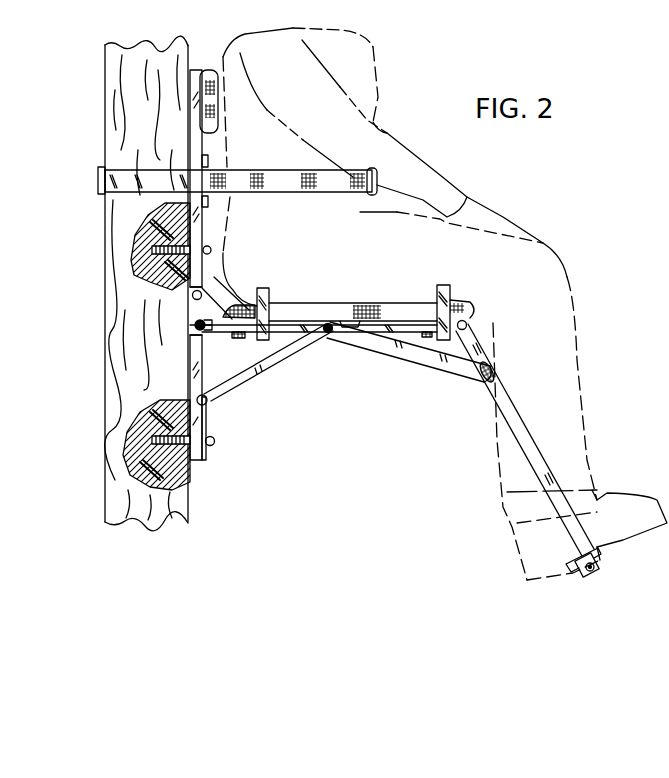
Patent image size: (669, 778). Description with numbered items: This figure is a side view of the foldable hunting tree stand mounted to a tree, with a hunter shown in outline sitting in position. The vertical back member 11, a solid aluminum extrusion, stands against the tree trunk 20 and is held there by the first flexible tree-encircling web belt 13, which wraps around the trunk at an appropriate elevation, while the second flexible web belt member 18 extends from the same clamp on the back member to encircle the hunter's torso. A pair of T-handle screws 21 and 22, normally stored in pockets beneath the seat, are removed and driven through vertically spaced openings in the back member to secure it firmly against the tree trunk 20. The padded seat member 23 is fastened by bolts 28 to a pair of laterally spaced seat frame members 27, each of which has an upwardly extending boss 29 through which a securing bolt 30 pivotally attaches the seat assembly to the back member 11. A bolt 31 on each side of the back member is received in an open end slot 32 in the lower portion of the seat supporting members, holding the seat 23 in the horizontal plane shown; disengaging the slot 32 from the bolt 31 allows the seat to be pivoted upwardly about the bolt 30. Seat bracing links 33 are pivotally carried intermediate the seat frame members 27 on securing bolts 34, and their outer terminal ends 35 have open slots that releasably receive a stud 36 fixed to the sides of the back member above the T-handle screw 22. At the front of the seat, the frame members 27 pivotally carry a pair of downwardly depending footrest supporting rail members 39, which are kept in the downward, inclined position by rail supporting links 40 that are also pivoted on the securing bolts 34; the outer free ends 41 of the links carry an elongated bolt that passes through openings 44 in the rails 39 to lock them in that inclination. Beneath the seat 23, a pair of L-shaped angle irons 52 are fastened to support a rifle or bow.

The vertical back member 11 is at (208, 68).
The first flexible tree-encircling web belt 13 is at (102, 186).
The second flexible web belt member 18 is at (281, 192).
The tree trunk 20 is at (110, 96).
The T-handle screw 21 is at (210, 247).
The T-handle screw 22 is at (213, 446).
The padded seat member 23 is at (357, 281).
The seat frame members 27 is at (286, 328).
The bolts 28 is at (240, 338).
The upwardly extending boss 29 is at (220, 298).
The securing bolt 30 is at (213, 278).
The bolt 31 is at (196, 326).
The open end slot 32 is at (200, 337).
The seat bracing links 33 is at (293, 350).
The securing bolts 34 is at (333, 338).
The outer terminal ends 35 is at (209, 400).
The stud 36 is at (206, 412).
The footrest supporting rail members 39 is at (568, 432).
The rail supporting links 40 is at (392, 348).
The outer free ends 41 is at (450, 368).
The openings 44 is at (497, 363).
The L-shaped angle irons 52 is at (452, 293).